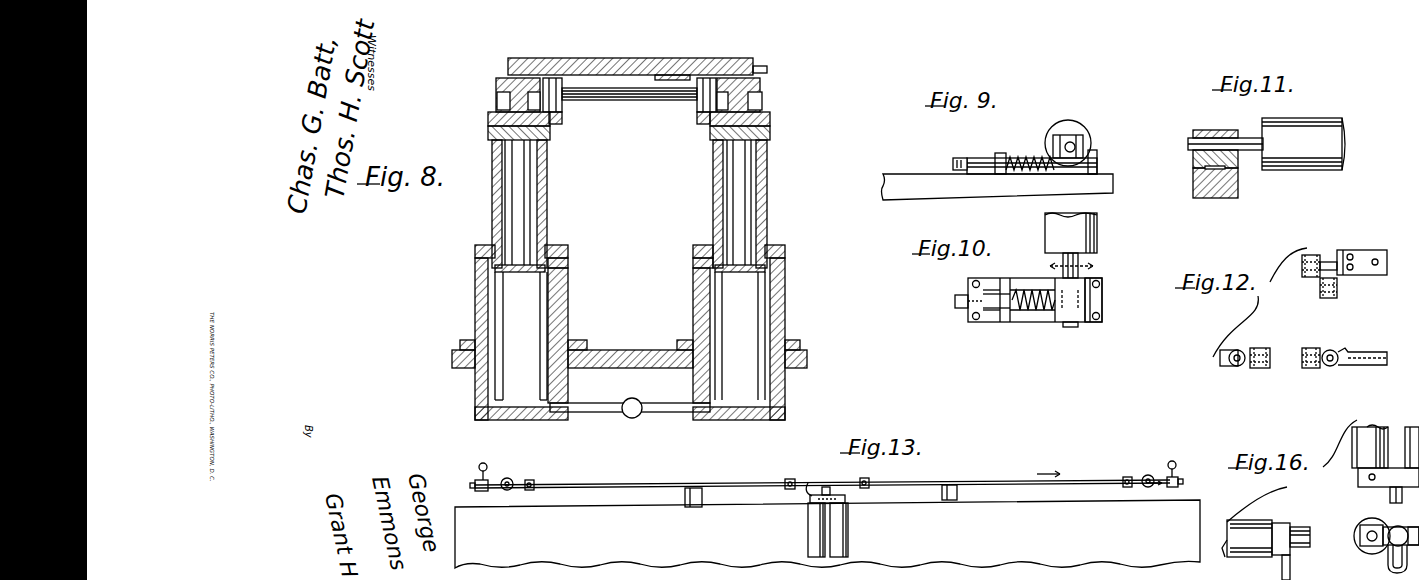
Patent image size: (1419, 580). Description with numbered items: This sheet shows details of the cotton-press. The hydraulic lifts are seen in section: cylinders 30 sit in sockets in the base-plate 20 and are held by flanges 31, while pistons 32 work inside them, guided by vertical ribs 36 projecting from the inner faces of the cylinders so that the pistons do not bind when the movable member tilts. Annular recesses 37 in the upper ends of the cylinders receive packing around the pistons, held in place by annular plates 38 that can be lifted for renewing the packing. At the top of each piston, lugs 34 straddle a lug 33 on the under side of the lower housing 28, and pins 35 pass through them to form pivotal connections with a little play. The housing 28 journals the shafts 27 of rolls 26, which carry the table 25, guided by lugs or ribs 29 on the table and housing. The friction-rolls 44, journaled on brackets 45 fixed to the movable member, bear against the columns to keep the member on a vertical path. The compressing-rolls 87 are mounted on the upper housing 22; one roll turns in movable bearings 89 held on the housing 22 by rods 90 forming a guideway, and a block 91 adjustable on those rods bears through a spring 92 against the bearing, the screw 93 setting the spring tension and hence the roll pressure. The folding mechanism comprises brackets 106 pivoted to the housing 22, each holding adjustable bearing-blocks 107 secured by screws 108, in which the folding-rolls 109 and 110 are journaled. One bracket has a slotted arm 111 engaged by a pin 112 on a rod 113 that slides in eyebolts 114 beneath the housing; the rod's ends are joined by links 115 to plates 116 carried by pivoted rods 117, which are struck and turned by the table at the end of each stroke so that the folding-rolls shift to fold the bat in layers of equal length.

In FIG. 8, the base-plate 20 is at (452, 360).
In FIG. 9, the housing 22 is at (998, 187).
In FIG. 11, the housing 22 is at (1219, 196).
In FIG. 8, the table 25 is at (665, 58).
In FIG. 13, the table 25 is at (827, 534).
In FIG. 8, the rolls 26 is at (558, 115).
In FIG. 8, the shafts 27 is at (625, 102).
In FIG. 8, the housing 28 is at (497, 98).
In FIG. 8, the lugs or ribs 29 is at (497, 80).
In FIG. 8, the cylinders 30 is at (476, 302).
In FIG. 8, the flanges 31 is at (460, 348).
In FIG. 8, the pistons 32 is at (548, 196).
In FIG. 8, the lugs 33 is at (628, 202).
In FIG. 8, the lugs 34 is at (490, 118).
In FIG. 8, the pins 35 is at (492, 130).
In FIG. 8, the vertical ribs 36 is at (545, 318).
In FIG. 8, the annular recesses 37 is at (553, 262).
In FIG. 8, the annular plates 38 is at (560, 245).
In FIG. 12, the friction-rolls 44 is at (1312, 255).
In FIG. 12, the brackets 45 is at (1370, 275).
In FIG. 9, the compressing-rolls 87 is at (1078, 128).
In FIG. 10, the compressing-rolls 87 is at (1097, 233).
In FIG. 11, the compressing-rolls 87 is at (1344, 132).
In FIG. 9, the movable bearings 89 is at (1080, 147).
In FIG. 10, the movable bearings 89 is at (1102, 305).
In FIG. 11, the movable bearings 89 is at (1196, 130).
In FIG. 9, the rods 90 is at (1070, 160).
In FIG. 10, the rods 90 is at (1025, 283).
In FIG. 11, the rods 90 is at (1193, 160).
In FIG. 9, the block 91 is at (1001, 152).
In FIG. 9, the spring 92 is at (1026, 156).
In FIG. 10, the spring 92 is at (1034, 312).
In FIG. 9, the screw 93 is at (960, 157).
In FIG. 10, the screw 93 is at (955, 301).
In FIG. 16, the brackets 106 is at (1290, 572).
In FIG. 16, the bearing-blocks 107 is at (1357, 526).
In FIG. 16, the screws 108 is at (1371, 480).
In FIG. 13, the folding-roll 109 is at (808, 530).
In FIG. 16, the folding-roll 109 is at (1372, 427).
In FIG. 13, the folding-roll 110 is at (848, 527).
In FIG. 16, the folding-roll 110 is at (1248, 557).
In FIG. 16, the slotted arm 111 is at (1388, 570).
In FIG. 13, the pin 112 is at (810, 485).
In FIG. 13, the rod 113 is at (822, 484).
In FIG. 13, the eyebolts 114 is at (530, 479).
In FIG. 13, the links 115 is at (505, 490).
In FIG. 13, the plates 116 is at (476, 479).
In FIG. 13, the rods 117 is at (483, 463).